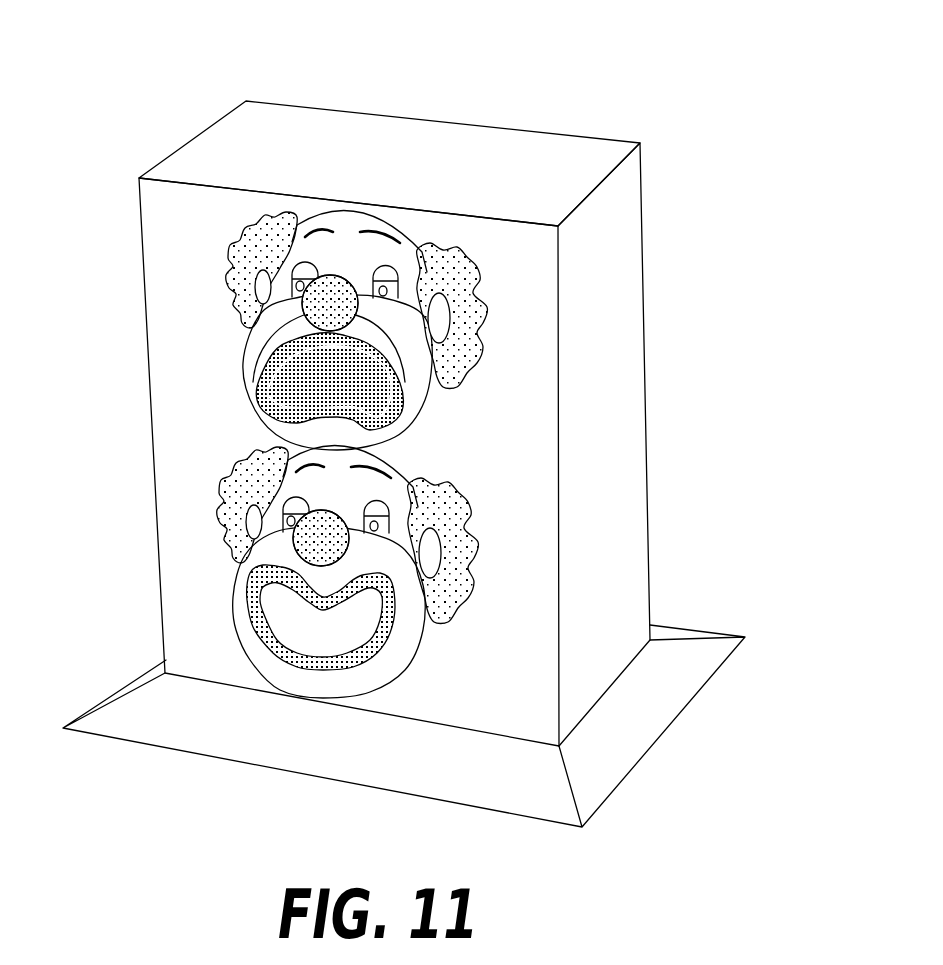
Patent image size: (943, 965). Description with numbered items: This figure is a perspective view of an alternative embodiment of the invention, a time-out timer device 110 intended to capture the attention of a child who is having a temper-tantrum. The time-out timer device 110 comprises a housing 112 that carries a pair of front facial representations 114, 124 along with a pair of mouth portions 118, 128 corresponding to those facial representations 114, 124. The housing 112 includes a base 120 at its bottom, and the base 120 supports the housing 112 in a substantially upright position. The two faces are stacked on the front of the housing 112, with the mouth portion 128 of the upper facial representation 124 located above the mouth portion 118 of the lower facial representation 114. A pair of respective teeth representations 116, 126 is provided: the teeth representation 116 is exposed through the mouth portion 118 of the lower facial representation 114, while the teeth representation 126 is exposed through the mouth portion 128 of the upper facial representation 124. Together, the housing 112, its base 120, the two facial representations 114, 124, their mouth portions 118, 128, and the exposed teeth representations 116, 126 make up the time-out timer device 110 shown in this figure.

The time-out timer device 110 is at (493, 389).
The housing 112 is at (613, 302).
The front facial representation 114 is at (280, 612).
The teeth representation 116 is at (288, 618).
The mouth portion 118 is at (352, 563).
The base 120 is at (632, 717).
The front facial representation 124 is at (285, 377).
The teeth representation 126 is at (310, 385).
The mouth portion 128 is at (370, 410).